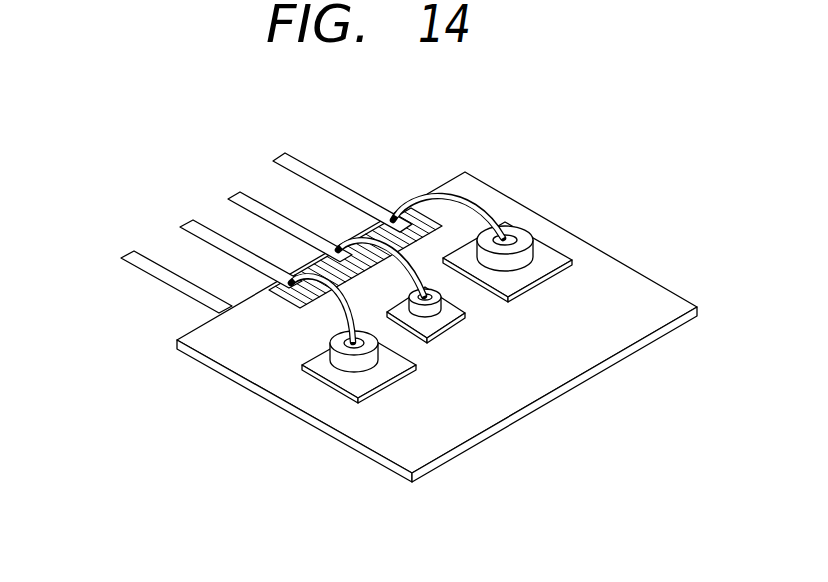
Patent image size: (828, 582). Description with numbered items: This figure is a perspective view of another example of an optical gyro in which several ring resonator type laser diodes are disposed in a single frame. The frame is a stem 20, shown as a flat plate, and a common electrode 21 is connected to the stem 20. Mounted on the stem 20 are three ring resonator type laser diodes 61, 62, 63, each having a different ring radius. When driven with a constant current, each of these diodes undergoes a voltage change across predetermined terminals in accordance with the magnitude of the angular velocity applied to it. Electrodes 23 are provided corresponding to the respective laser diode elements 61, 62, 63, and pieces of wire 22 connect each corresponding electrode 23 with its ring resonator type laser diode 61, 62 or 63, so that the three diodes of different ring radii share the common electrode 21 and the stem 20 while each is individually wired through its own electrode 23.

The stem 20 is at (651, 283).
The common electrode 21 is at (134, 254).
The pieces of wire 22 is at (465, 191).
The electrodes 23 is at (191, 220).
The ring resonator type laser diode 61 is at (348, 381).
The ring resonator type laser diode 62 is at (451, 318).
The ring resonator type laser diode 63 is at (554, 257).